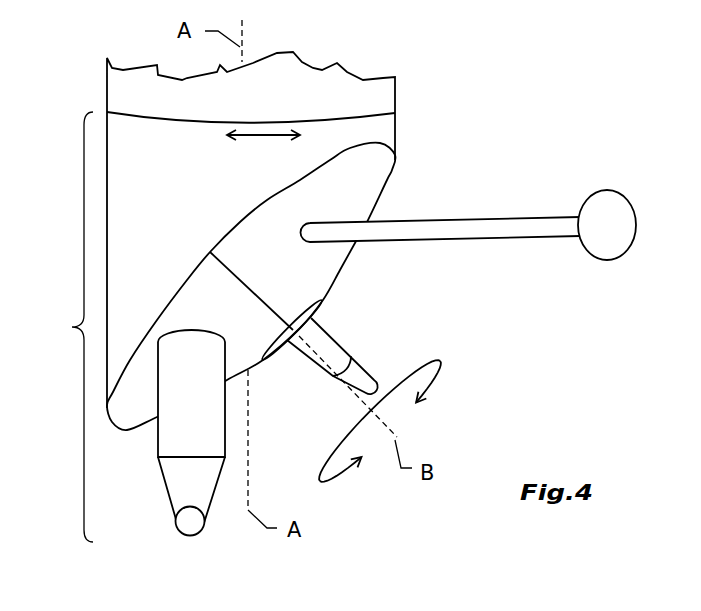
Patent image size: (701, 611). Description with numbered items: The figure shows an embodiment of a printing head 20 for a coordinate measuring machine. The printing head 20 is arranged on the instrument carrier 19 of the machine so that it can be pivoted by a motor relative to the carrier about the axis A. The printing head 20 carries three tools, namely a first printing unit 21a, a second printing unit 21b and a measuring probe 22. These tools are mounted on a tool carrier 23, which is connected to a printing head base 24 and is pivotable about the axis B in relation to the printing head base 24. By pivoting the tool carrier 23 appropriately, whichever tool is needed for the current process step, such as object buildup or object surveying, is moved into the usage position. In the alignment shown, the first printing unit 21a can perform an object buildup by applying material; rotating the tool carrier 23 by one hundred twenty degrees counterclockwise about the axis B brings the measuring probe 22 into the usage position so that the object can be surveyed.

The instrument carrier 19 is at (219, 230).
The printing head 20 is at (64, 327).
The first printing unit 21a is at (163, 452).
The second printing unit 21b is at (348, 345).
The measuring probe 22 is at (469, 247).
The tool carrier 23 is at (291, 286).
The printing head base 24 is at (291, 123).